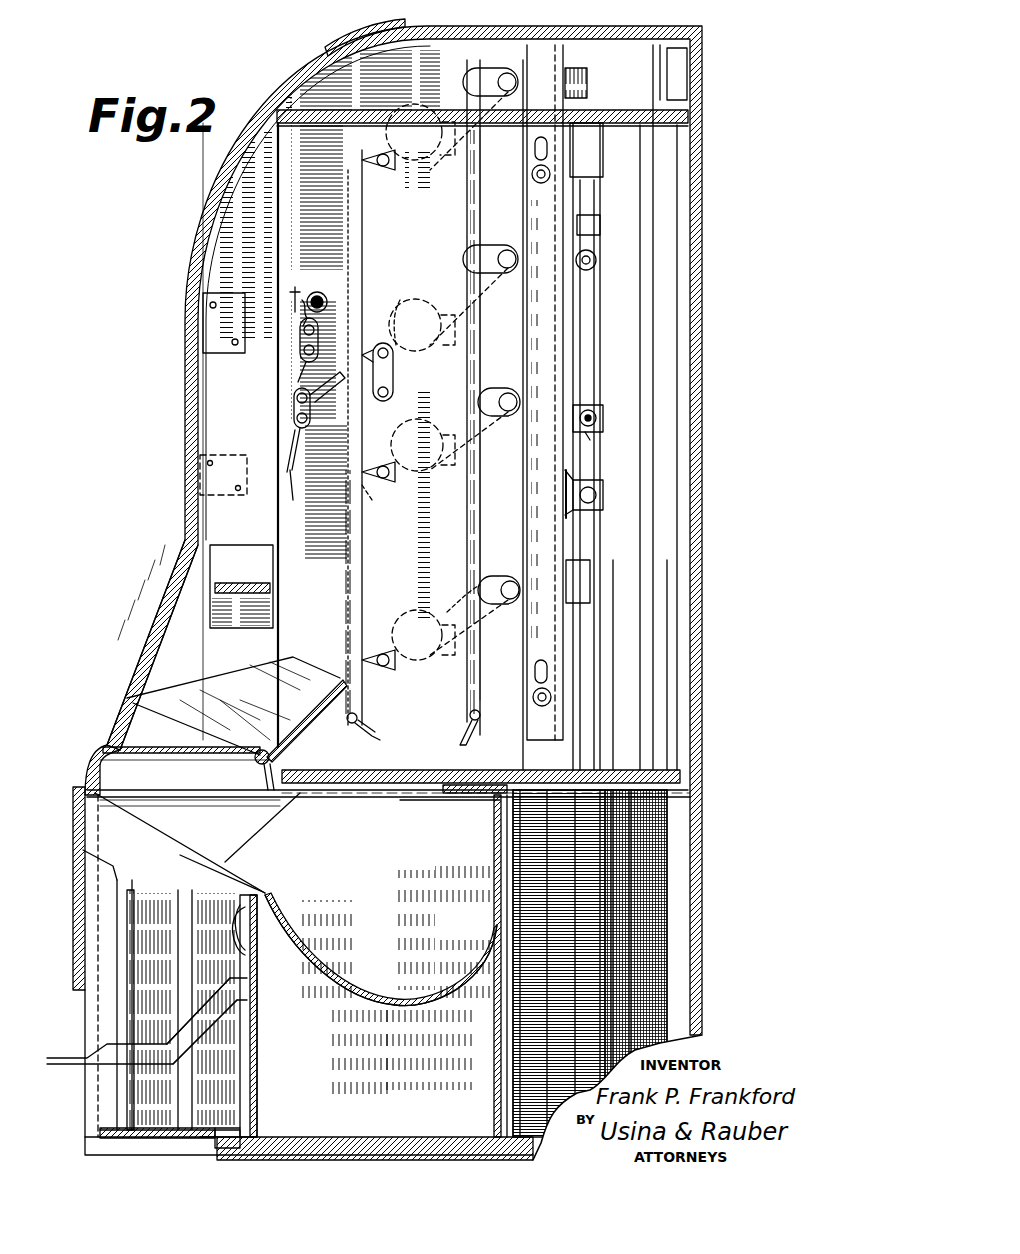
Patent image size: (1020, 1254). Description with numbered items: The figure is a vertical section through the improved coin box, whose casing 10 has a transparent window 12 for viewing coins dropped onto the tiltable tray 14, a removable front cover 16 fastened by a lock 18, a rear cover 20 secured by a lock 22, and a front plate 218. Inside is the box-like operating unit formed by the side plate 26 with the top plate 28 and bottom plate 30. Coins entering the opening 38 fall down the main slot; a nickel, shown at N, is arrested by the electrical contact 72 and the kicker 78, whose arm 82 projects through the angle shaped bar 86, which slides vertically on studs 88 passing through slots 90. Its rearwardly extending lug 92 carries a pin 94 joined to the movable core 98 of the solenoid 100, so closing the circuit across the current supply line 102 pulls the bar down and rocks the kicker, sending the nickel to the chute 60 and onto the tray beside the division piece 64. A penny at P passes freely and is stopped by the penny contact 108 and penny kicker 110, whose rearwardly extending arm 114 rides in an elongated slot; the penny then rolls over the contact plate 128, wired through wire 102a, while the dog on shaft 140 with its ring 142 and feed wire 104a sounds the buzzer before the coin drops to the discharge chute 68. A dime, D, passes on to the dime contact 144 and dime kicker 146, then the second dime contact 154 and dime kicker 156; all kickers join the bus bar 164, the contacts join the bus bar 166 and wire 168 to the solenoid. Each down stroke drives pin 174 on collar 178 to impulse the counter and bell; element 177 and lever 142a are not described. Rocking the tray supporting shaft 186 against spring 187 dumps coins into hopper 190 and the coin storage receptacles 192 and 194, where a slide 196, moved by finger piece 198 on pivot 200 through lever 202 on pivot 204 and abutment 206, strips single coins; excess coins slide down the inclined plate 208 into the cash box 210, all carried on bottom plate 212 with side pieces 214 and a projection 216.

The casing 10 is at (180, 400).
The transparent window 12 is at (160, 640).
The tiltable tray 14 is at (140, 753).
The removable front cover 16 is at (73, 940).
The lock 18 is at (73, 830).
The rear cover 20 is at (690, 278).
The lock 22 is at (687, 95).
The side plate 26 is at (672, 355).
The top plate 28 is at (634, 108).
The bottom plate 30 is at (670, 770).
The opening 38 is at (392, 22).
The chute 60 is at (222, 628).
The division piece 64 is at (135, 715).
The discharge chute 68 is at (240, 582).
The electrical contact 72 is at (385, 172).
The kicker 78 is at (470, 120).
The arm 82 is at (587, 80).
The angle shaped bar 86 is at (528, 355).
The studs 88 is at (532, 176).
The slots 90 is at (535, 150).
The rearwardly extending lug 92 is at (573, 512).
The pin 94 is at (604, 482).
The movable core 98 is at (690, 968).
The solenoid 100 is at (605, 852).
The current supply line 102 is at (470, 740).
The wire 102a is at (309, 456).
The feed wire 104a is at (296, 380).
The penny contact 108 is at (358, 282).
The penny kicker 110 is at (446, 345).
The rearwardly extending arm 114 is at (592, 270).
The contact plate 128 is at (330, 382).
The shaft 140 is at (295, 296).
The ring 142 is at (318, 292).
The lever 142a is at (300, 308).
The dime contact 144 is at (380, 498).
The dime kicker 146 is at (400, 478).
The dime contact 154 is at (395, 668).
The dime kicker 156 is at (460, 620).
The bus bar 164 is at (480, 532).
The bus bar 166 is at (362, 562).
The wire 168 is at (382, 738).
The pin 174 is at (586, 216).
The pin 177 is at (604, 425).
The collar 178 is at (604, 416).
The tray supporting shaft 186 is at (256, 765).
The spring 187 is at (266, 792).
The hopper 190 is at (165, 820).
The coin storage receptacle 192 is at (127, 1110).
The coin storage receptacle 194 is at (140, 1132).
The slide 196 is at (226, 1148).
The finger piece 198 is at (70, 1058).
The pivot 200 is at (243, 1025).
The lever 202 is at (250, 964).
The pivot 204 is at (260, 900).
The abutment 206 is at (235, 1130).
The inclined plate 208 is at (258, 888).
The cash box 210 is at (340, 995).
The bottom plate 212 is at (305, 1135).
The side pieces 214 is at (416, 805).
The projection 216 is at (472, 796).
The front plate 218 is at (85, 772).
The nickel N is at (415, 114).
The penny P is at (405, 300).
The dime roller position D is at (426, 424).